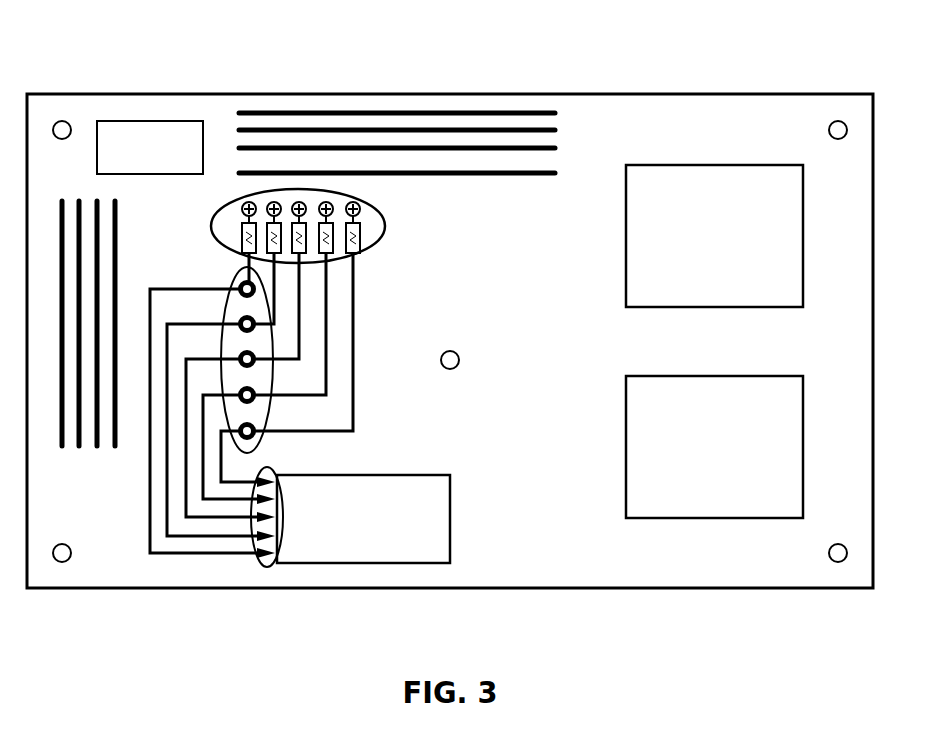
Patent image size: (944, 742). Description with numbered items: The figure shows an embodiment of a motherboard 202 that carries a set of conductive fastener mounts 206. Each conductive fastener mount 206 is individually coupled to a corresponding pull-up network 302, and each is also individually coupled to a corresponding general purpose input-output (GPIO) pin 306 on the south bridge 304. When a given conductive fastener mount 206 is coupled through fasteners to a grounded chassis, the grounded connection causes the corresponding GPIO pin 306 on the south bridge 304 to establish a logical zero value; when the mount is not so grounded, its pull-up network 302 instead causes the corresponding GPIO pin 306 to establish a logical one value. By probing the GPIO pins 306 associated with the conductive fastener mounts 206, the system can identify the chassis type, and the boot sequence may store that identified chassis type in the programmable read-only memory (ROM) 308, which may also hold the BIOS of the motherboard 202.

The motherboard 202 is at (97, 93).
The programmable read-only memory (ROM) 308 is at (150, 147).
The pull-up network 302 is at (375, 206).
The conductive fastener mount 206 is at (253, 445).
The south bridge 304 is at (363, 519).
The general purpose input-output (GPIO) pin 306 is at (257, 562).